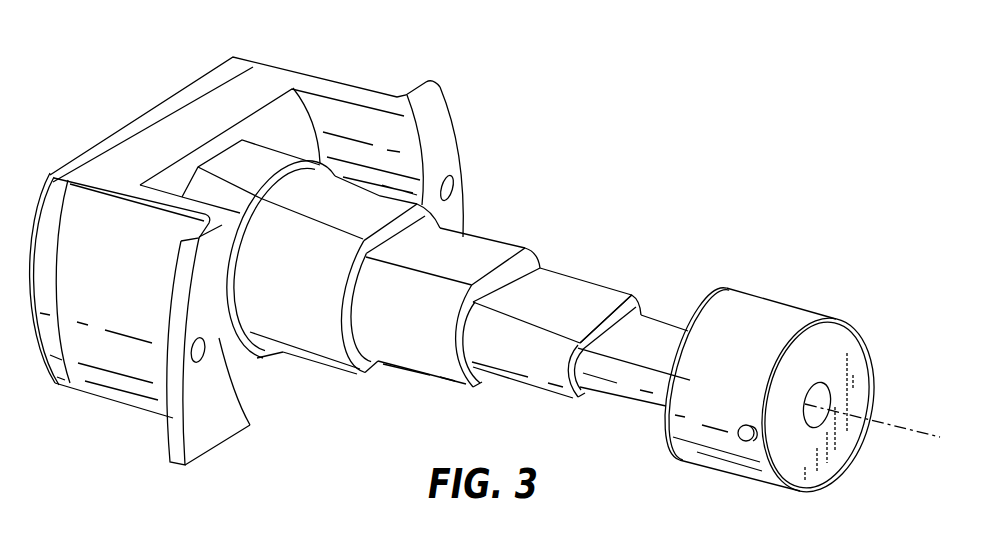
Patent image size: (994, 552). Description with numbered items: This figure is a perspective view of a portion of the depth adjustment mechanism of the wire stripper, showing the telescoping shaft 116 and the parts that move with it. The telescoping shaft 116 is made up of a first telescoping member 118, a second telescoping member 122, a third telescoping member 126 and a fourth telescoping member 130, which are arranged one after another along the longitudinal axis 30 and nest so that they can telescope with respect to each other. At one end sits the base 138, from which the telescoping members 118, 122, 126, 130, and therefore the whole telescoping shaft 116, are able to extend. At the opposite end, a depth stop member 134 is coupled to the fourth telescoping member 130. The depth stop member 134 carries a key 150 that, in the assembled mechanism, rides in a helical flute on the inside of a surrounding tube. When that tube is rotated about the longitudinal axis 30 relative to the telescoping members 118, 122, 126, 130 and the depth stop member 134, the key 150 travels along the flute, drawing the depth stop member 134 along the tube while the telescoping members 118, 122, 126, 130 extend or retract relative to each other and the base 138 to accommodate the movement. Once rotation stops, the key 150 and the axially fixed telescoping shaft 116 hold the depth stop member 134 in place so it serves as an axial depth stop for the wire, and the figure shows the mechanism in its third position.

The longitudinal axis 30 is at (889, 428).
The shaft assembly 116 is at (568, 203).
The first shaft portion 118 is at (367, 203).
The second shaft portion 122 is at (477, 247).
The third shaft portion 126 is at (569, 297).
The fourth shaft portion 130 is at (658, 337).
The knob 134 is at (766, 321).
The mounting tab 138 is at (227, 163).
The pin 150 is at (742, 443).